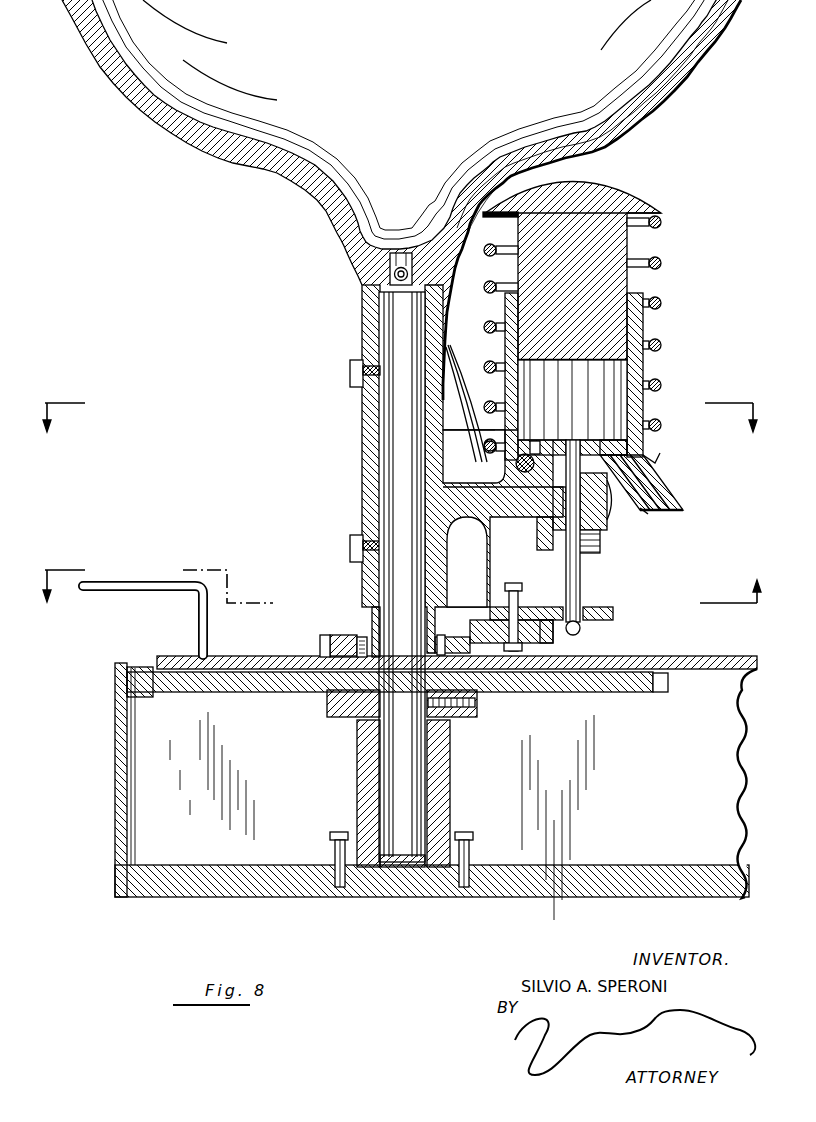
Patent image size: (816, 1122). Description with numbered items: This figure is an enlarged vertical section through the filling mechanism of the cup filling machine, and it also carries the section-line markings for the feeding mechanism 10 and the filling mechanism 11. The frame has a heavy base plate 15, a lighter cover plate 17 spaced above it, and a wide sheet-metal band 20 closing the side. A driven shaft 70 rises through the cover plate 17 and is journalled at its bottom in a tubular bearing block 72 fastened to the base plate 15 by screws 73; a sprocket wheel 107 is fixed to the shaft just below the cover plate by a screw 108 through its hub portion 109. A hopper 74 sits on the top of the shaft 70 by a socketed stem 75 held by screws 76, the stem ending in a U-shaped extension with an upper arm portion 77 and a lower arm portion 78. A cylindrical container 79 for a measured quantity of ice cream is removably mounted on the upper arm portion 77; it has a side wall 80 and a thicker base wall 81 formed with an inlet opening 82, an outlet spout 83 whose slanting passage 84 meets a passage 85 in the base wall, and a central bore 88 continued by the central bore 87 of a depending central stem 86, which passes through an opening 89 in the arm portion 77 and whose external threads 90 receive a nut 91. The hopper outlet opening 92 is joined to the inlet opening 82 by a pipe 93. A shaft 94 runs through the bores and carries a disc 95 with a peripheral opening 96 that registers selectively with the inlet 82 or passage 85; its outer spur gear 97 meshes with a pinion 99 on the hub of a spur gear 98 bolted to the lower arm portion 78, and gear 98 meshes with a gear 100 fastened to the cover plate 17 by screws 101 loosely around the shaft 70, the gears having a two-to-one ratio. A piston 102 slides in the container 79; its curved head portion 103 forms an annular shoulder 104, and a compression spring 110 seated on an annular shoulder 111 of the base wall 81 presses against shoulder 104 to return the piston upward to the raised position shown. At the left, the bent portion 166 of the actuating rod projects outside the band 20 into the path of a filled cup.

The hopper 74 is at (157, 120).
The socketed stem 75 is at (364, 496).
The driven shaft 70 is at (400, 457).
The outlet opening 92 is at (390, 279).
The screws 76 is at (350, 370).
The pipe 93 is at (460, 368).
The annular shoulder 104 is at (480, 247).
The curved head portion 103 is at (608, 188).
The piston 102 is at (640, 250).
The compression spring 110 is at (645, 303).
The side wall 80 is at (645, 327).
The cylindrical container 79 is at (650, 366).
The disc 95 is at (592, 436).
The opening 96 is at (537, 438).
The passage 85 is at (632, 457).
The annular shoulder 111 is at (656, 461).
The base wall 81 is at (660, 465).
The central bore 88 is at (658, 483).
The outlet spout 83 is at (683, 510).
The slanting passage 84 is at (668, 513).
The central stem 86 is at (587, 502).
The central bore 87 is at (600, 533).
The nut 91 is at (593, 545).
The external threads 90 is at (583, 557).
The shaft 94 is at (580, 589).
The upper arm portion 77 is at (497, 487).
The inlet opening 82 is at (520, 473).
The opening 89 is at (540, 527).
The lower arm portion 78 is at (475, 587).
The pinion 99 is at (490, 612).
The spur gear 98 is at (553, 643).
The spur gear 97 is at (607, 620).
The cover plate 17 is at (717, 655).
The bent portion 166 is at (141, 582).
The screws 101 is at (353, 635).
The gear 100 is at (357, 637).
The hub portion 109 is at (327, 712).
The screw 108 is at (460, 717).
The sprocket wheel 107 is at (622, 697).
The tubular bearing block 72 is at (452, 778).
The screws 73 is at (340, 830).
The band 20 is at (113, 771).
The base plate 15 is at (637, 866).
The mechanism for feeding cups and containers 10 is at (400, 405).
The mechanism for filling the cups 11 is at (402, 576).